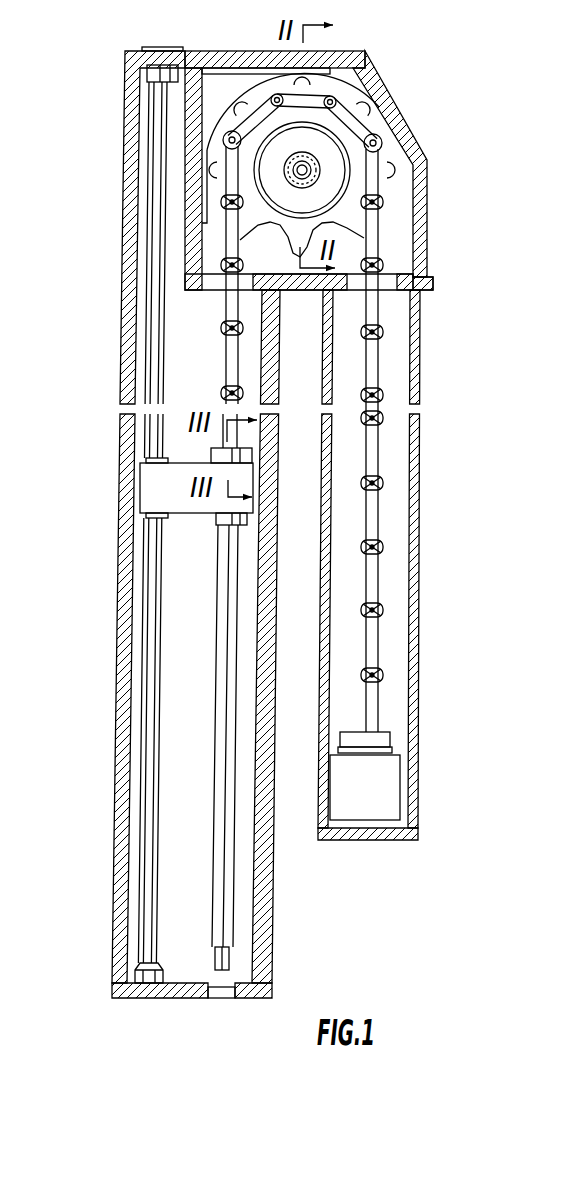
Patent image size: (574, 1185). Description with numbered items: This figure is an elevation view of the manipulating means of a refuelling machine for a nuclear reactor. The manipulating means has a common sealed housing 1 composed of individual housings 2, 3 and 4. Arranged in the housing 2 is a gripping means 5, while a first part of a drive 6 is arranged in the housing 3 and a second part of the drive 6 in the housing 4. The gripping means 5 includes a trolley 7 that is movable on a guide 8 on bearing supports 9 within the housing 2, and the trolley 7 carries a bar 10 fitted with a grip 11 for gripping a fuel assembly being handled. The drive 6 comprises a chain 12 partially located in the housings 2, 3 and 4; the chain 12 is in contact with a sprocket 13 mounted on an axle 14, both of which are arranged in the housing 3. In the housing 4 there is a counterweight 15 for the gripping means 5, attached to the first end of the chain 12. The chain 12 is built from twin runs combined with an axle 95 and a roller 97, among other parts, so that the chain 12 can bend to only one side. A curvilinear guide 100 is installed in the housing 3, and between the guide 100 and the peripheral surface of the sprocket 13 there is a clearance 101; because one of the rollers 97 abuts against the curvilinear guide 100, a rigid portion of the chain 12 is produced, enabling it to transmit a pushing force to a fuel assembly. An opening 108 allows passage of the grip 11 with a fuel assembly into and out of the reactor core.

The common sealed housing 1 is at (120, 246).
The housing 2 is at (133, 193).
The housing 3 is at (420, 177).
The housing 4 is at (422, 545).
The gripping means 5 is at (205, 545).
The drive 6 is at (397, 245).
The trolley 7 is at (148, 484).
The guide 8 is at (158, 97).
The bearing supports 9 is at (161, 67).
The bar 10 is at (227, 642).
The grip 11 is at (225, 955).
The chain 12 is at (373, 357).
The sprocket 13 is at (357, 176).
The axle 14 is at (310, 157).
The counterweight 15 is at (390, 778).
The axle 95 is at (335, 98).
The roller 97 is at (357, 136).
The curvilinear guide 100 is at (213, 72).
The clearance 101 is at (213, 155).
The opening 108 is at (228, 993).